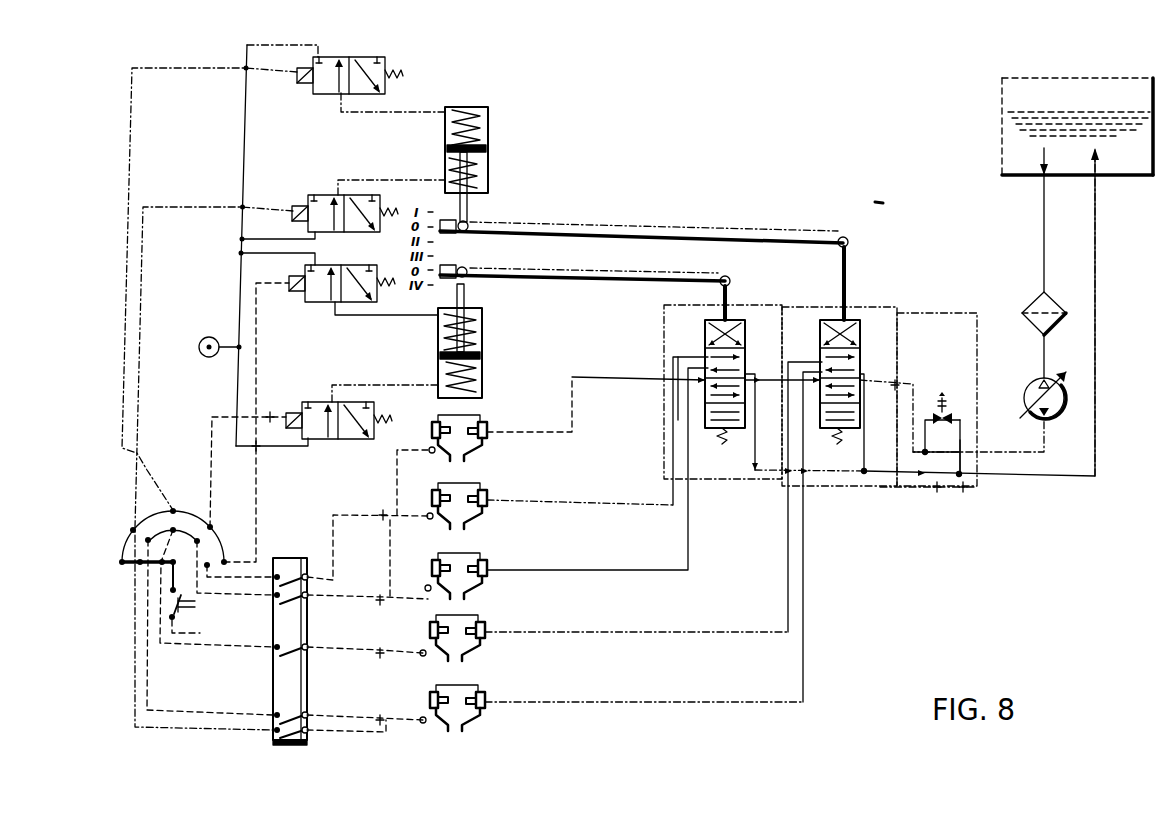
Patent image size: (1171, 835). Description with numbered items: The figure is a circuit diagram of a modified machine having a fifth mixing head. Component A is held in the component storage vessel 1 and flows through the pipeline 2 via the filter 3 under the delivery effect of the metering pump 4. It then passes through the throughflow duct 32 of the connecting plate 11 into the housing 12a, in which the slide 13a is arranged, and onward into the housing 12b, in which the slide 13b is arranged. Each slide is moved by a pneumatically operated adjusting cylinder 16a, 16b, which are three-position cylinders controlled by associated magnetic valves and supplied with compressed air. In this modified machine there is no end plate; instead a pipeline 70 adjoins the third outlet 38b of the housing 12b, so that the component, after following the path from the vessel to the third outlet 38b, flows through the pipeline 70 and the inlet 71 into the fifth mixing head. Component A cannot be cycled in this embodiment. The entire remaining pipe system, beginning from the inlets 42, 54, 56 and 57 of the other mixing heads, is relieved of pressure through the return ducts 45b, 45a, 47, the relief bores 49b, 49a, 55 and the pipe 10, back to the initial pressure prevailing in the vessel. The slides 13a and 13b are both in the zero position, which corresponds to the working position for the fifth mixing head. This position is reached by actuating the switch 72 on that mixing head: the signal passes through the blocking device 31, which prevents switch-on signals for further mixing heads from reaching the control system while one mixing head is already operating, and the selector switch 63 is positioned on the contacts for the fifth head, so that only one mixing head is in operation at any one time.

The component storage vessel 1 is at (1125, 178).
The pipeline 2 is at (1043, 263).
The filter 3 is at (1037, 303).
The metering pump 4 is at (1037, 380).
The pipe 10 is at (1098, 263).
The connecting plate 11 is at (955, 330).
The housing 12a is at (872, 318).
The housing 12b is at (760, 318).
The slide 13a is at (849, 274).
The slide 13b is at (732, 290).
The adjusting cylinder 16a is at (490, 141).
The adjusting cylinder 16b is at (484, 342).
The blocking device 31 is at (307, 683).
The throughflow duct 32 is at (940, 456).
The third outlet 38b is at (686, 356).
The inlet 42 is at (488, 505).
The return duct 45a is at (830, 472).
The return duct 45b is at (762, 470).
The return duct 47 is at (962, 478).
The relief bore 49a is at (866, 445).
The relief bore 49b is at (758, 474).
The inlet 54 is at (488, 573).
The relief bore 55 is at (992, 483).
The inlet 56 is at (486, 710).
The inlet 57 is at (486, 640).
The selector switch 63 is at (150, 572).
The pipeline 70 is at (656, 372).
The inlet 71 is at (488, 438).
The switch 72 is at (432, 455).